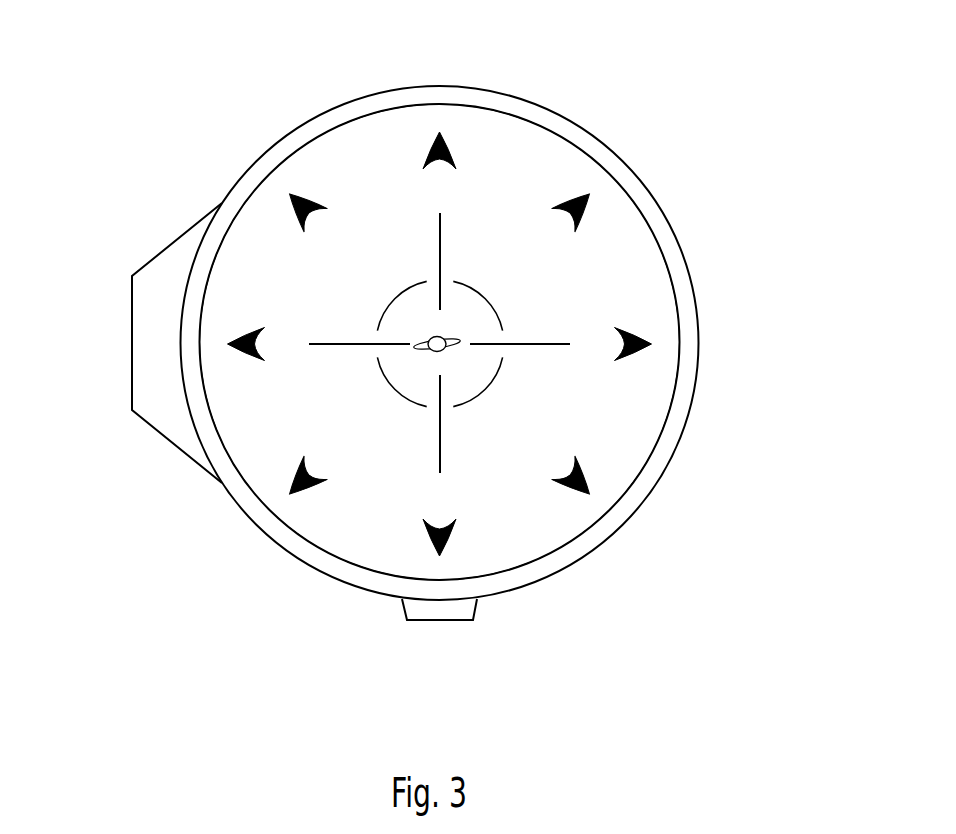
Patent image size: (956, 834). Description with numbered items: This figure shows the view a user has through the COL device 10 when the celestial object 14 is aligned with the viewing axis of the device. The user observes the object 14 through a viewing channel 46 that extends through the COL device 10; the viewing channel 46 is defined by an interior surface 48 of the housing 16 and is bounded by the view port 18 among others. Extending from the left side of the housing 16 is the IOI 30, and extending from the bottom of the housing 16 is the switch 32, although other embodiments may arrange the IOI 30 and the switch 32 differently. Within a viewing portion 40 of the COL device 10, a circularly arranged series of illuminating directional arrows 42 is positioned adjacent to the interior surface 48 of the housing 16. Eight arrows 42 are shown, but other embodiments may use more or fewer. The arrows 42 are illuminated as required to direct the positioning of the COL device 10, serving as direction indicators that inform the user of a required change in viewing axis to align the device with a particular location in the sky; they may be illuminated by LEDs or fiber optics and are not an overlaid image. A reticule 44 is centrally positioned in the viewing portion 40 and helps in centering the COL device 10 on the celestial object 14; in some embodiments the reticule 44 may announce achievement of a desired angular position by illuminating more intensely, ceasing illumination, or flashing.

The COL device 10 is at (162, 43).
The celestial object 14 is at (448, 338).
The housing 16 is at (642, 182).
The view port 18 is at (248, 492).
The IOI 30 is at (148, 260).
The switch 32 is at (477, 611).
The viewing portion 40 is at (340, 306).
The illuminating directional arrows 42 is at (430, 157).
The reticule 44 is at (472, 285).
The viewing channel 46 is at (610, 412).
The interior surface 48 is at (533, 556).